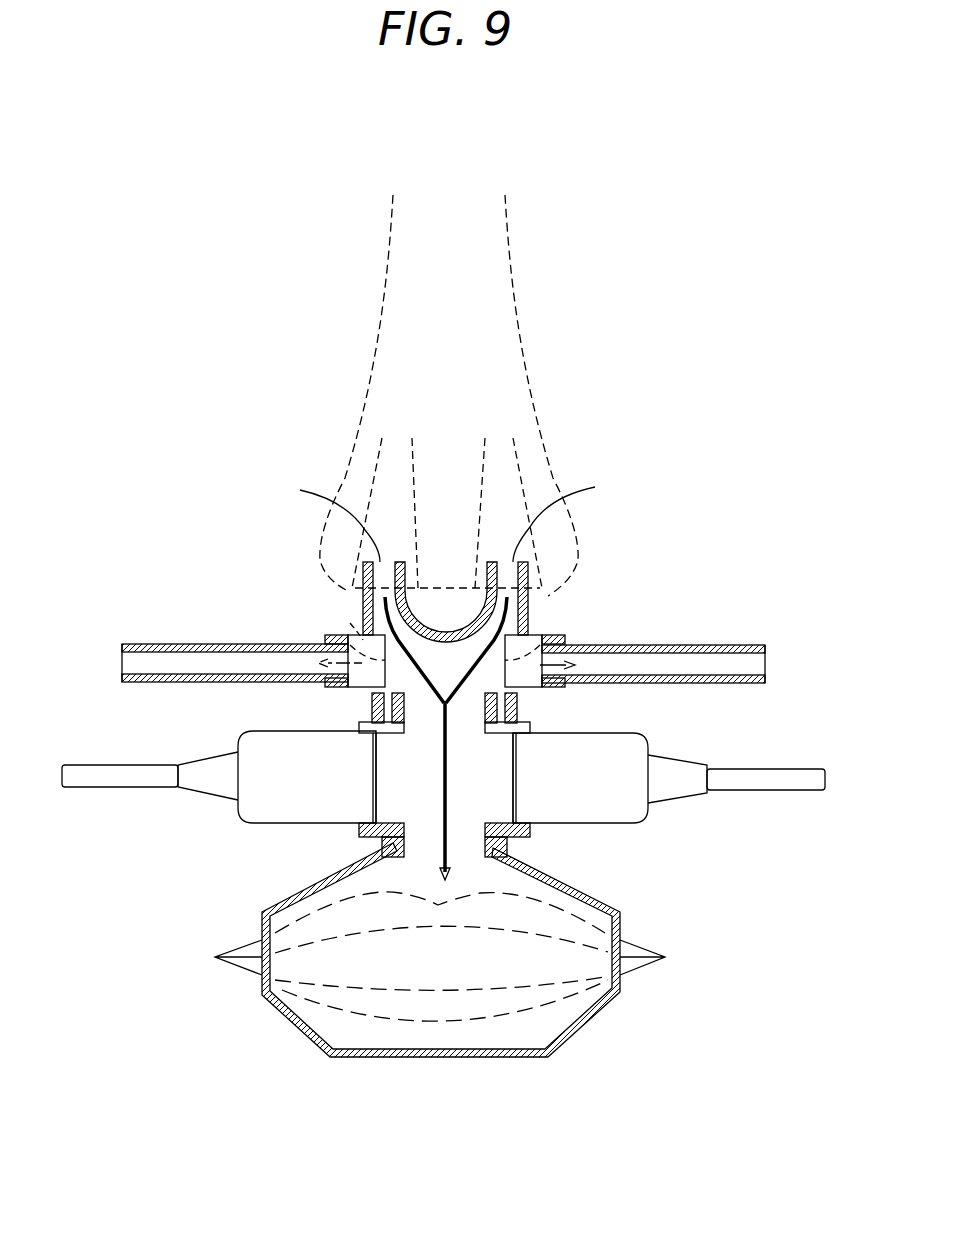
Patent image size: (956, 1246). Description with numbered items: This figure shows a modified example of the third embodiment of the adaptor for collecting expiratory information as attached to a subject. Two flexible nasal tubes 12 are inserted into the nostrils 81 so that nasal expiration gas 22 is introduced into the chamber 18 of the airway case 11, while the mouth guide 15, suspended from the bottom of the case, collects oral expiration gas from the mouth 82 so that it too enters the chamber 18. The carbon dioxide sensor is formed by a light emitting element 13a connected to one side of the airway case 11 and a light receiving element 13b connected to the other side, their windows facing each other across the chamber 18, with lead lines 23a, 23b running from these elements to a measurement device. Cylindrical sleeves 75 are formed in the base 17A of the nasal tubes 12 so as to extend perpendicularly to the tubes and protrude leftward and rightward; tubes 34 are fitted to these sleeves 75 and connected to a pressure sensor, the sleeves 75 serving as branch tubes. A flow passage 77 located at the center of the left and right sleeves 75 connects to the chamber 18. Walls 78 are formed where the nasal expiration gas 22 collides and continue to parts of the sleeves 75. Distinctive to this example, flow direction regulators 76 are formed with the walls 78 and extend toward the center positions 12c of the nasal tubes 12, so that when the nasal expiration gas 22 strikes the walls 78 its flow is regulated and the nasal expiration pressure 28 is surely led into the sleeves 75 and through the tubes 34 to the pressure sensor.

The airway case 11 is at (520, 717).
The nasal tubes 12 is at (362, 590).
The center positions of the nasal tubes 12c is at (450, 517).
The light emitting element 13a is at (630, 740).
The light receiving element 13b is at (260, 738).
The mouth guide 15 is at (587, 902).
The base of the nasal tubes 17A is at (373, 700).
The chamber 18 is at (488, 800).
The nasal expiration gas 22 is at (357, 880).
The lead line 23a is at (797, 773).
The lead line 23b is at (90, 770).
The nasal expiration pressure 28 is at (307, 638).
The tubes 34 is at (186, 643).
The cylindrical sleeves 75 is at (377, 640).
The flow direction regulators 76 is at (375, 640).
The flow passage 77 is at (440, 670).
The walls 78 is at (397, 688).
The nostrils 81 is at (373, 472).
The mouth 82 is at (643, 953).